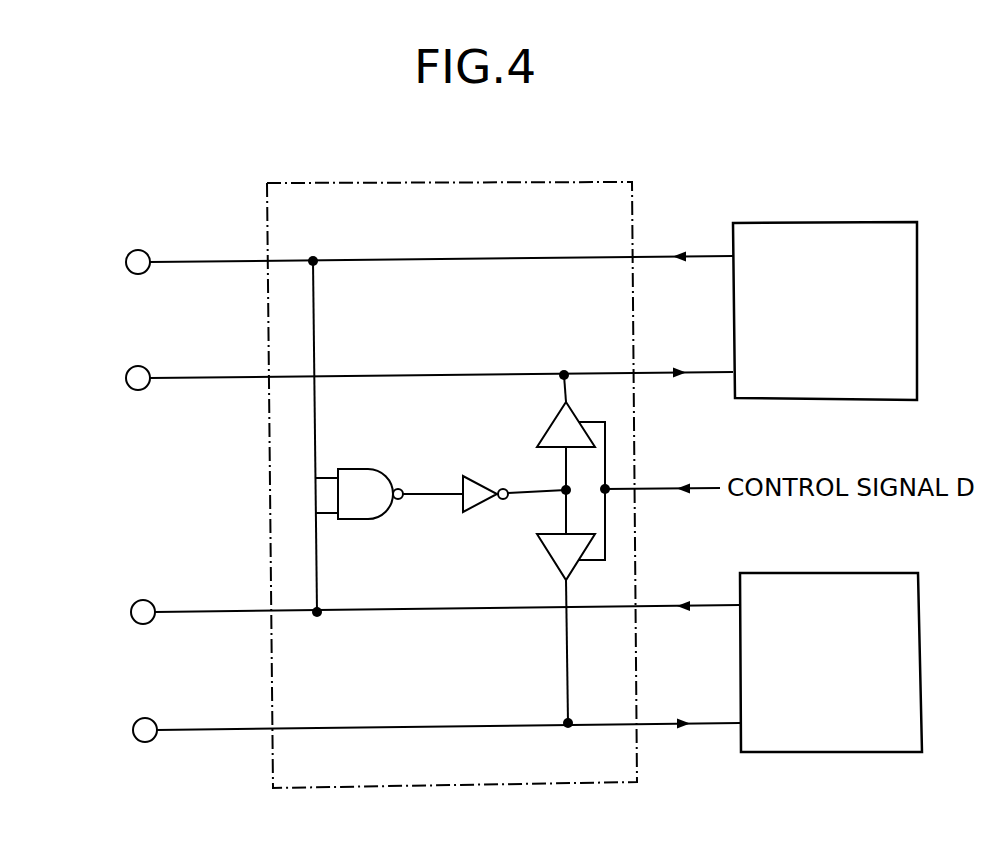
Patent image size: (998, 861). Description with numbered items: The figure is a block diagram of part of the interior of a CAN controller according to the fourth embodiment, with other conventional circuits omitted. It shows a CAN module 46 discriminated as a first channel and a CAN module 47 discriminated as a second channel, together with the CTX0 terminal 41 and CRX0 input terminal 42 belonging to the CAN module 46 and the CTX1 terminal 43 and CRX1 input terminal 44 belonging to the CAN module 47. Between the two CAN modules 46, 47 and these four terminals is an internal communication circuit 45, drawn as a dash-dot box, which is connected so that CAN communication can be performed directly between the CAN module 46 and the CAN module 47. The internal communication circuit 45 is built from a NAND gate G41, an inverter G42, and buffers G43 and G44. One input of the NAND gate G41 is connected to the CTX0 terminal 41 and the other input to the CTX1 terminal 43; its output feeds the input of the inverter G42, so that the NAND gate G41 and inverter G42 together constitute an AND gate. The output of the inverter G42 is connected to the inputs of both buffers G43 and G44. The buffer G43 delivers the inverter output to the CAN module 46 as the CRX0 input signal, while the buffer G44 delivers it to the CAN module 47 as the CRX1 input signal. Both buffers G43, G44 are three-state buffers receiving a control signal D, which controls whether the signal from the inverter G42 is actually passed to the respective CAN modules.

The CTX0 terminal 41 is at (141, 250).
The CRX0 input terminal 42 is at (141, 366).
The CTX1 terminal 43 is at (146, 600).
The CRX1 input terminal 44 is at (148, 718).
The internal communication circuit 45 is at (588, 194).
The CAN module 46 is at (829, 223).
The CAN module 47 is at (834, 573).
The NAND gate G41 is at (352, 470).
The inverter G42 is at (464, 475).
The buffer G43 is at (577, 417).
The buffer G44 is at (580, 570).